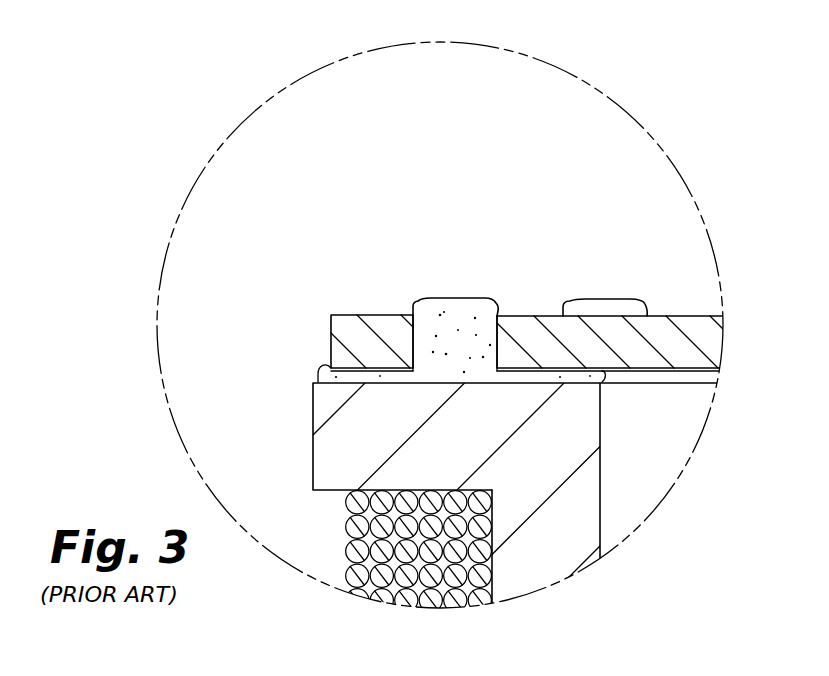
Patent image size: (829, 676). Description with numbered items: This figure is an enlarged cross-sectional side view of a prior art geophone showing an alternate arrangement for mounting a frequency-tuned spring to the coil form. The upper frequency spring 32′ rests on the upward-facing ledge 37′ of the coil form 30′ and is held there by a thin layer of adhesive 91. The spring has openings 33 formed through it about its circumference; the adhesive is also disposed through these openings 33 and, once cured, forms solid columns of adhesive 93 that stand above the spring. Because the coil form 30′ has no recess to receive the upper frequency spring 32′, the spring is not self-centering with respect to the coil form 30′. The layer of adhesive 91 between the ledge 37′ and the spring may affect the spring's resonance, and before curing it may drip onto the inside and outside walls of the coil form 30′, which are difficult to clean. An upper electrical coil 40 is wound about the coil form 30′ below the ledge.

The coil form 30′ is at (313, 410).
The upper frequency spring 32′ is at (342, 315).
The openings 33 is at (414, 338).
The upward-facing ledge 37′ is at (527, 380).
The upper electrical coil 40 is at (345, 526).
The layer of adhesive 91 is at (320, 366).
The solid columns of adhesive 93 is at (452, 297).